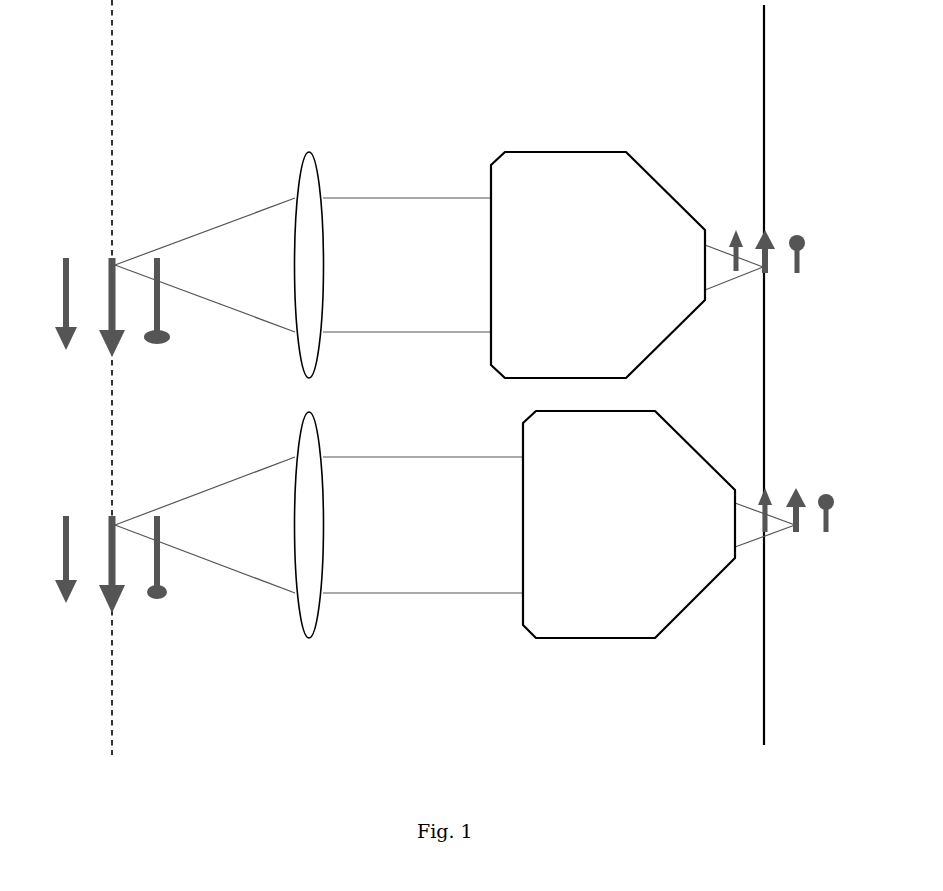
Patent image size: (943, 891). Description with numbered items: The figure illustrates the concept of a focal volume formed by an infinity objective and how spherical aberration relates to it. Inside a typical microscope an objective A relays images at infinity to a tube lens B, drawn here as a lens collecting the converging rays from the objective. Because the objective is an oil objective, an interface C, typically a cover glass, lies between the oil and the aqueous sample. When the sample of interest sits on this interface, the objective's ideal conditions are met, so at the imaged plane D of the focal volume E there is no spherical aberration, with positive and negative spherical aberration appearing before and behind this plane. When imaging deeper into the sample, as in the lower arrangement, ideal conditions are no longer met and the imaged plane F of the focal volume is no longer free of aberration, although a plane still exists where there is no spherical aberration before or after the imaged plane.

The objective A is at (598, 265).
The tube lens B is at (309, 265).
The interface C is at (765, 375).
The imaged plane D is at (141, 377).
The focal volume E is at (110, 336).
The imaged plane F is at (108, 602).